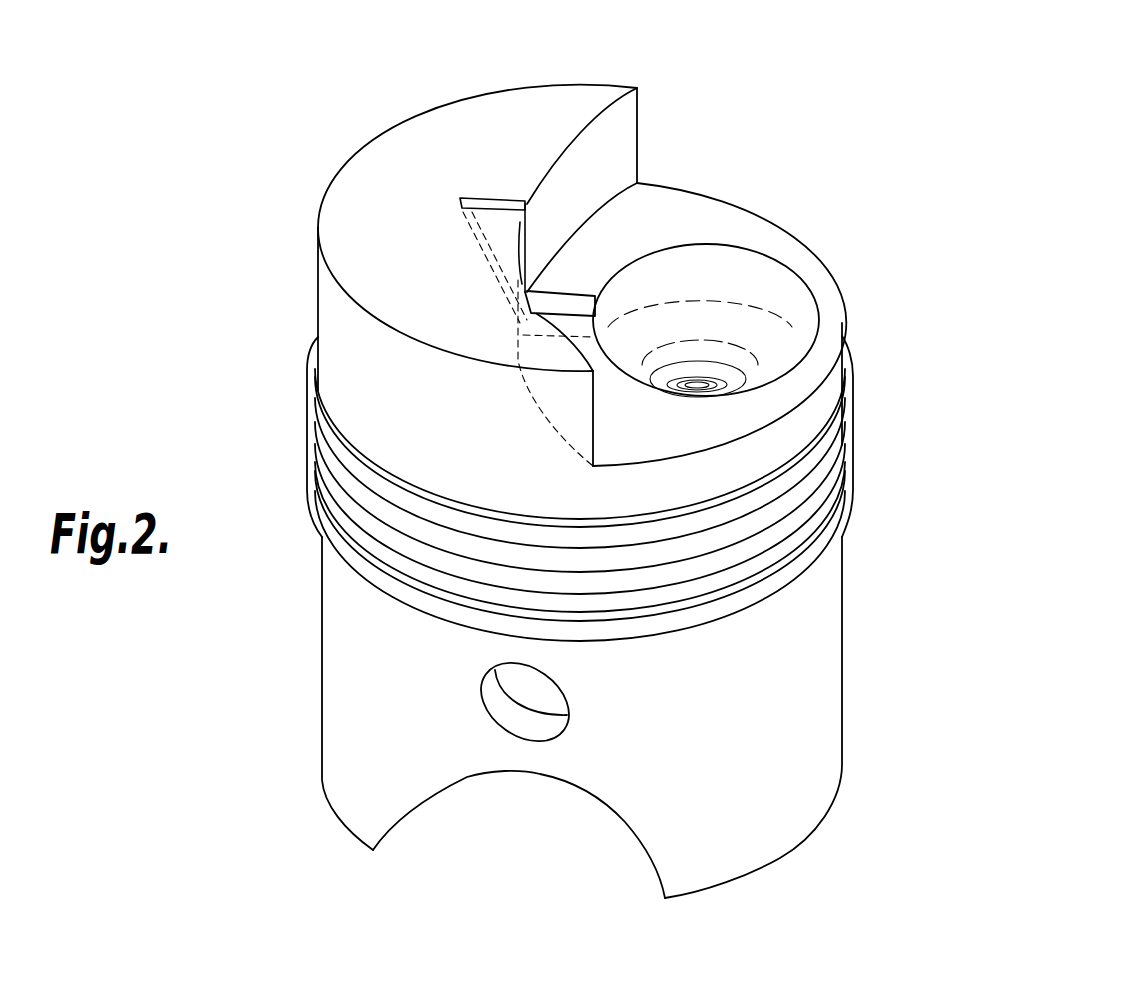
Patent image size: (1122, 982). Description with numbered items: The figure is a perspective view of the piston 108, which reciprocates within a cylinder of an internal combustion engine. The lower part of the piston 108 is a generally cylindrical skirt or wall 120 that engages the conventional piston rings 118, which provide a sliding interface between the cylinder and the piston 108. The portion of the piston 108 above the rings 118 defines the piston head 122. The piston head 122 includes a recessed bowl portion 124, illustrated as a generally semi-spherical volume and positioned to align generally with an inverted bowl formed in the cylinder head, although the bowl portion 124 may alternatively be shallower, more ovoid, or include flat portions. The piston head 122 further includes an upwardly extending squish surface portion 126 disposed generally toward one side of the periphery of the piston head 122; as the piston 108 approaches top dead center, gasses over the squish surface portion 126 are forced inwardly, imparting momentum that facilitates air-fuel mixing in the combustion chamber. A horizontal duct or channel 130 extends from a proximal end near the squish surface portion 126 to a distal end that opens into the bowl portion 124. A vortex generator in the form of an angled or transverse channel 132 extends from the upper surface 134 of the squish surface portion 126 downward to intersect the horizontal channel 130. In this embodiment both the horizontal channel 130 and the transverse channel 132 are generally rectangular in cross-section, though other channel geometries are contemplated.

The piston 108 is at (961, 542).
The piston rings 118 is at (313, 468).
The skirt or wall 120 is at (832, 732).
The piston head 122 is at (727, 218).
The recessed bowl portion 124 is at (787, 310).
The squish surface portion 126 is at (330, 315).
The horizontal channel 130 is at (568, 307).
The transverse channel 132 is at (487, 196).
The upper surface 134 is at (582, 90).